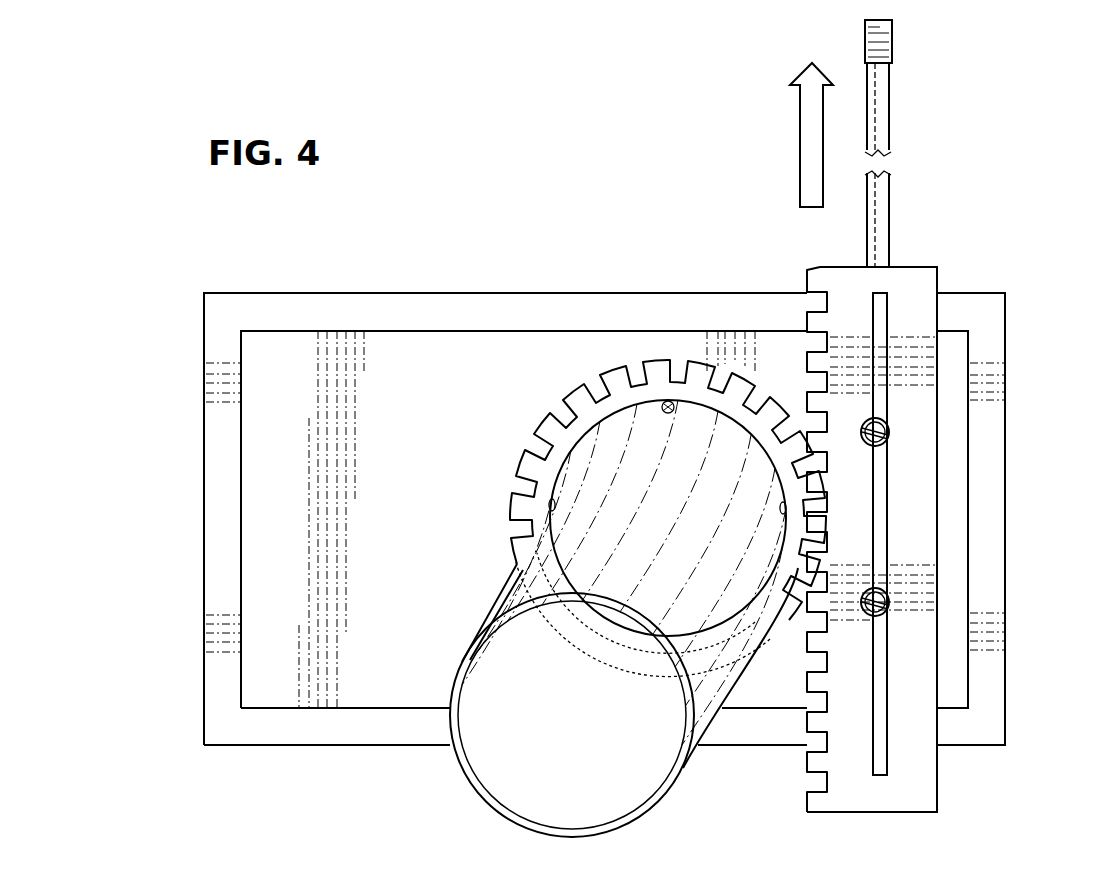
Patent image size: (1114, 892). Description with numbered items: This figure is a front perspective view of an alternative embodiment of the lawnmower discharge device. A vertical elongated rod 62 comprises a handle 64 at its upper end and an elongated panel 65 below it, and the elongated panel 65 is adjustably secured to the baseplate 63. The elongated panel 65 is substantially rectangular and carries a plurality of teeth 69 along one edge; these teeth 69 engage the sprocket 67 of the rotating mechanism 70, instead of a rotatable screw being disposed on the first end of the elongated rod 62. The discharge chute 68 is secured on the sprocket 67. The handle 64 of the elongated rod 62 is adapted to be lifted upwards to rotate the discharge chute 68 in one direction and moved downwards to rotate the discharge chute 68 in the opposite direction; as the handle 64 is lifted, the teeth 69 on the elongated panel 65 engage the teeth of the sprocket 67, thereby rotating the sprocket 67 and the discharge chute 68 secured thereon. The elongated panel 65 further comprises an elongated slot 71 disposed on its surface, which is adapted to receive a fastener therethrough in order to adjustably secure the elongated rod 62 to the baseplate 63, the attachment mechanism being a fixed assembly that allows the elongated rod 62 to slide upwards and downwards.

The elongated rod 62 is at (880, 225).
The baseplate 63 is at (992, 335).
The handle 64 is at (892, 42).
The elongated panel 65 is at (890, 613).
The sprocket 67 is at (714, 415).
The discharge chute 68 is at (465, 690).
The teeth 69 is at (805, 805).
The rotating mechanism 70 is at (530, 440).
The elongated slot 71 is at (880, 490).